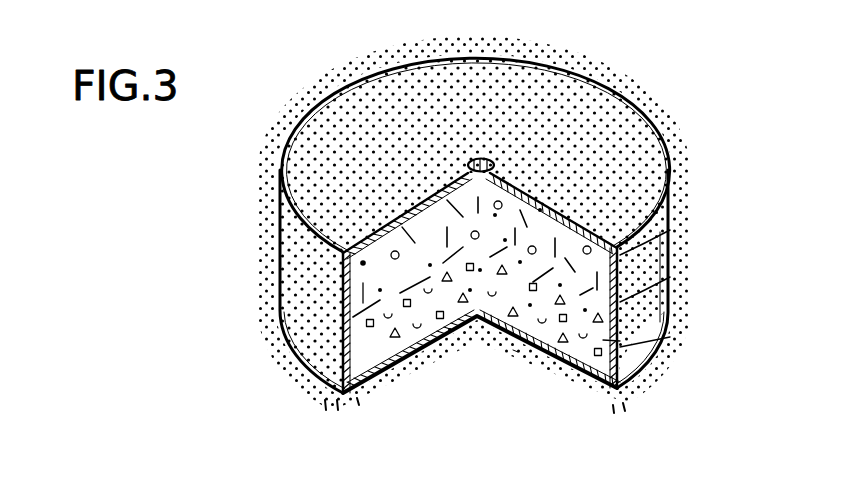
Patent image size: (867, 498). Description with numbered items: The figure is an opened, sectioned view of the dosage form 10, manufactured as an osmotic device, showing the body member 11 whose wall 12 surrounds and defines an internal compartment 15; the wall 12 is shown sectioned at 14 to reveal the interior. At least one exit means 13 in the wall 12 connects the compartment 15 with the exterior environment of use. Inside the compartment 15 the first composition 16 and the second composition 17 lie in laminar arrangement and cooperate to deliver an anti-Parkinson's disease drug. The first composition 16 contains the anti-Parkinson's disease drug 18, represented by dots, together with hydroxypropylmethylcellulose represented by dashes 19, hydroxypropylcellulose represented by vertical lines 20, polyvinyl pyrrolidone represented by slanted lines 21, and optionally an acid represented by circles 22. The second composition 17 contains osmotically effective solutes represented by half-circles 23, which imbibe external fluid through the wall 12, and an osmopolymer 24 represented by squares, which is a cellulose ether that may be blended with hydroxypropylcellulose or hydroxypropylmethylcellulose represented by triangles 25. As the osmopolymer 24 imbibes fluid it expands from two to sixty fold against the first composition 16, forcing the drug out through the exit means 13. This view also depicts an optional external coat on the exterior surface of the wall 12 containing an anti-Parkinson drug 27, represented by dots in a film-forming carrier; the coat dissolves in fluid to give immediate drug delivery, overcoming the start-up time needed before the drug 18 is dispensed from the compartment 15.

The dosage form 10 is at (695, 108).
The body member 11 is at (660, 272).
The wall 12 is at (620, 320).
The exit means 13 is at (489, 159).
The section of wall 14 is at (665, 237).
The internal compartment 15 is at (590, 222).
The first composition 16 is at (368, 275).
The second composition 17 is at (620, 347).
The anti-Parkinson's disease drug 18 is at (362, 263).
The hydroxypropylmethylcellulose 19 is at (650, 325).
The hydroxypropylcellulose 20 is at (370, 291).
The polyvinyl pyrrolidone 21 is at (412, 246).
The acid 22 is at (395, 250).
The osmotically effective compound 23 is at (417, 343).
The osmopolymer 24 is at (600, 356).
The hydroxypropylcellulose or hydroxypropylmethylcellulose 25 is at (563, 367).
The anti-Parkinson drug 27 is at (513, 350).